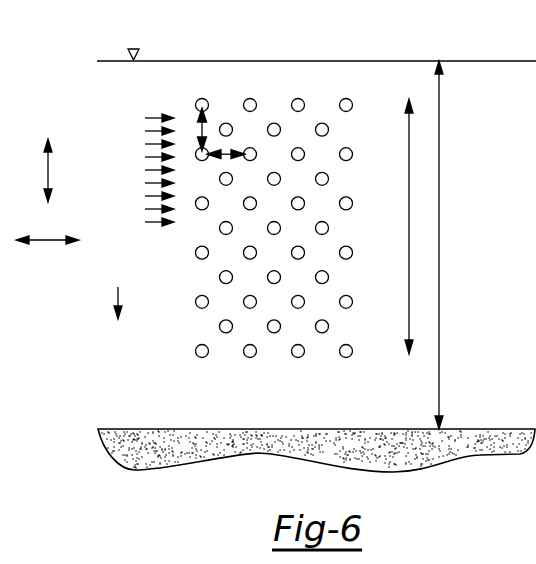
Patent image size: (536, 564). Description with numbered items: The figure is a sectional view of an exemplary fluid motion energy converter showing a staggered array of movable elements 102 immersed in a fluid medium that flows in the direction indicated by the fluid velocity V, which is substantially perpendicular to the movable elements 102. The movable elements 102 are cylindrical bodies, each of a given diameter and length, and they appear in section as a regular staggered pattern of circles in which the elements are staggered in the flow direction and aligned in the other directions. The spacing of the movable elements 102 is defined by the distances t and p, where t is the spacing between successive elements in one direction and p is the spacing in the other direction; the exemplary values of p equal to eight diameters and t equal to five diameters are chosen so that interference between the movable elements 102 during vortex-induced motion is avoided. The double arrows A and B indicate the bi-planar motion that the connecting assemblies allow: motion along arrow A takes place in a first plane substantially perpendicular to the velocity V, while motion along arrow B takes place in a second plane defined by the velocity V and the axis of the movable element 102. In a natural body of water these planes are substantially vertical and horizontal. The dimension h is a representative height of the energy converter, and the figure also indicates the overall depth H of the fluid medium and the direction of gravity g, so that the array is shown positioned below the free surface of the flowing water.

The movable element 102 is at (321, 123).
The representative height of the energy converter h is at (401, 226).
The total water depth H is at (447, 245).
The element spacing distance t is at (197, 129).
The element spacing distance p is at (226, 164).
The fluid velocity V is at (114, 90).
The arrow A is at (48, 156).
The arrow B is at (47, 254).
The gravity direction g is at (118, 290).